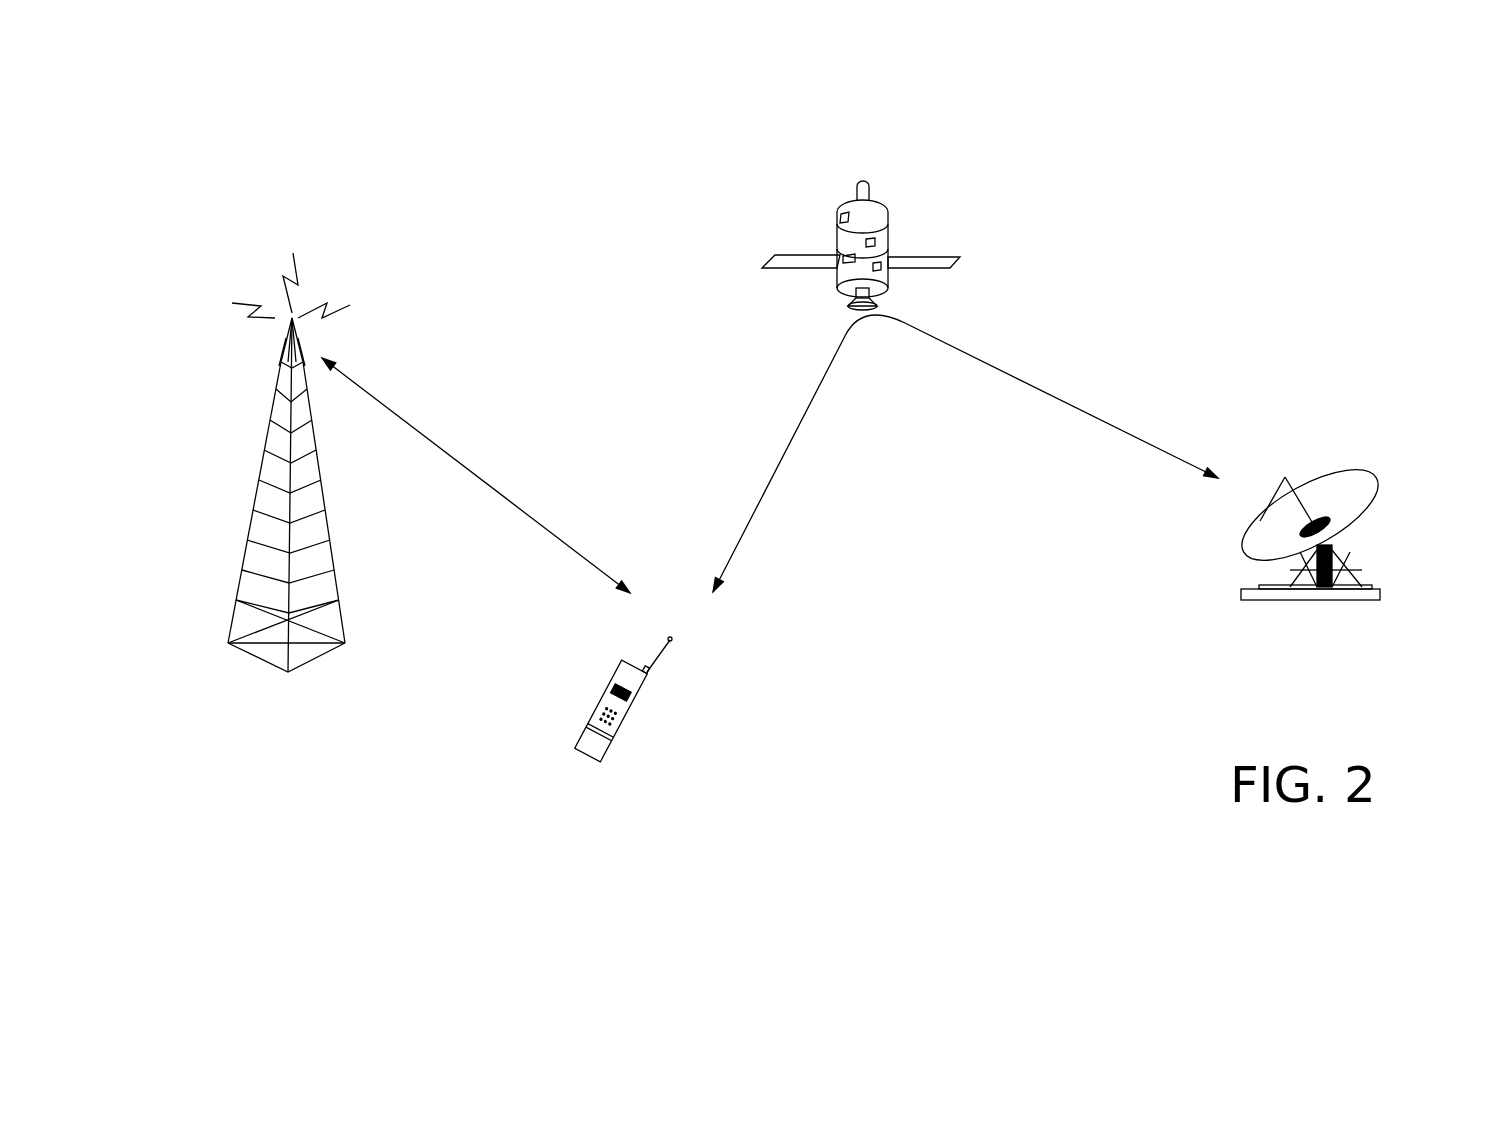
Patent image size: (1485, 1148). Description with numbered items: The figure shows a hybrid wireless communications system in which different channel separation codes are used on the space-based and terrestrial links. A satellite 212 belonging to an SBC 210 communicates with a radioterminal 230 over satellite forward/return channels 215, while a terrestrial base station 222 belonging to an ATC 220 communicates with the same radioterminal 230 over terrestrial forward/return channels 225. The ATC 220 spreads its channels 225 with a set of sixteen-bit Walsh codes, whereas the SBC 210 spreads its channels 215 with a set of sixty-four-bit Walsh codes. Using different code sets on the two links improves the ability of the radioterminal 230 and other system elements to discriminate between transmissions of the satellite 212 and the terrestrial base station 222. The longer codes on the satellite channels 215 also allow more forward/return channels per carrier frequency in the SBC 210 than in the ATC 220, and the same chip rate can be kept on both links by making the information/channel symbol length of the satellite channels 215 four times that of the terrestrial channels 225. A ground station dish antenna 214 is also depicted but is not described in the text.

The SBC 210 is at (1265, 243).
The satellite 212 is at (865, 179).
The satellite ground station dish antenna 214 is at (1385, 592).
The forward/return channels 215 is at (762, 497).
The ATC 220 is at (197, 788).
The terrestrial base station 222 is at (288, 672).
The forward/return channels 225 is at (450, 457).
The radioterminal 230 is at (647, 687).